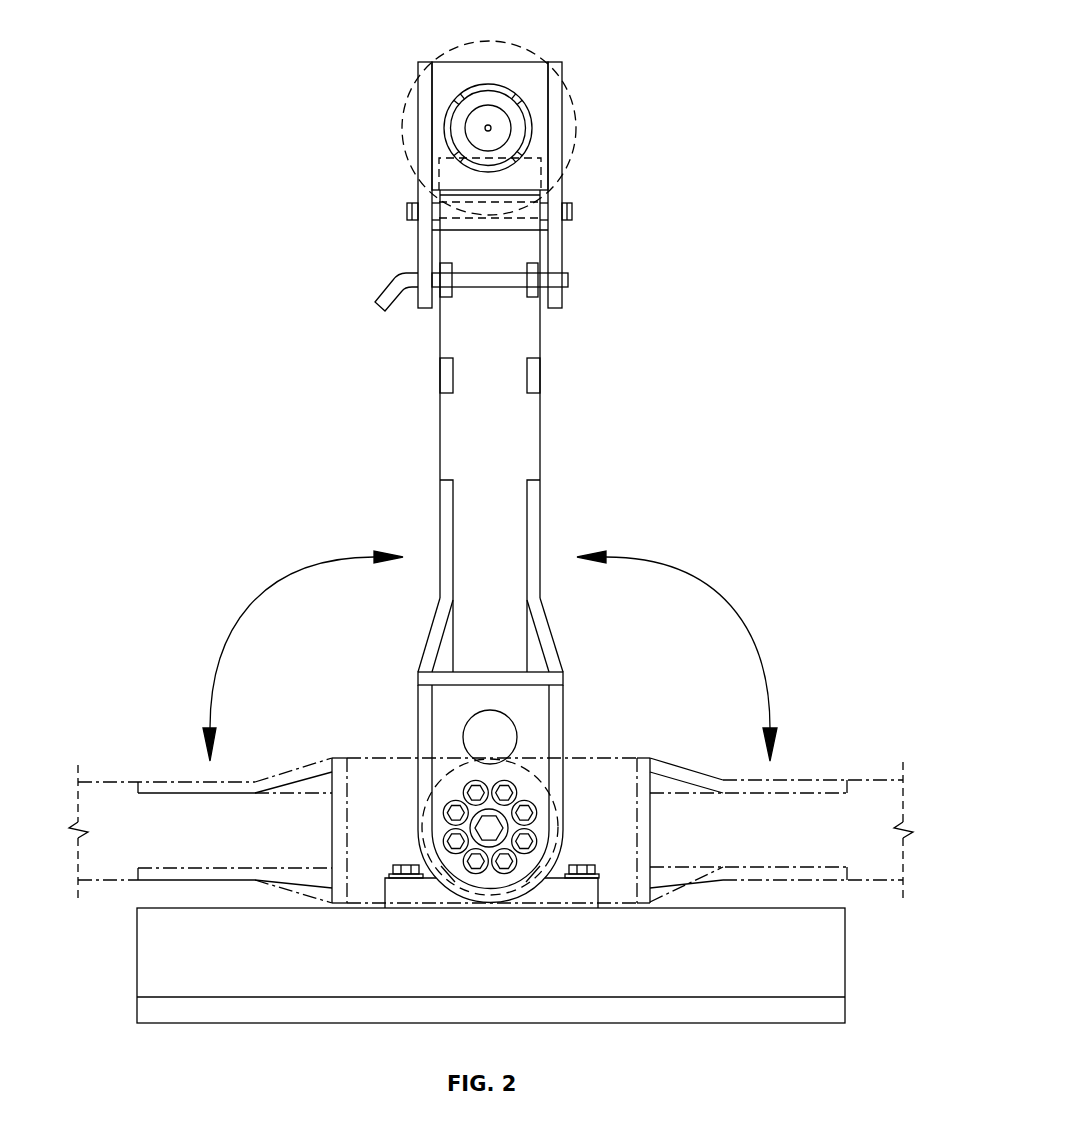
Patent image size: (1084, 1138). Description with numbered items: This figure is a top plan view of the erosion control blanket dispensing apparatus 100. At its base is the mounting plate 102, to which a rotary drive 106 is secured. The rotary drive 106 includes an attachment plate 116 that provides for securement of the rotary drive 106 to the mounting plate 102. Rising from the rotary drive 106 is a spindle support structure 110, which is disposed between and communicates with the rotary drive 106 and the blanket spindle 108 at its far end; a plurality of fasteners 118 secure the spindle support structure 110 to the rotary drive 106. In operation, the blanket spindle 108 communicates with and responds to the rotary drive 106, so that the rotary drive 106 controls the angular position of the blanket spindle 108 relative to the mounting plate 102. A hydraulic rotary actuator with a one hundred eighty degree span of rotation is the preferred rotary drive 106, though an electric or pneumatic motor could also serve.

The erosion control blanket dispensing apparatus 100 is at (607, 44).
The mounting plate 102 is at (817, 928).
The rotary drive 106 is at (480, 908).
The blanket spindle 108 is at (502, 138).
The spindle support structure 110 is at (562, 428).
The attachment plate 116 is at (572, 890).
The fasteners 118 is at (510, 789).